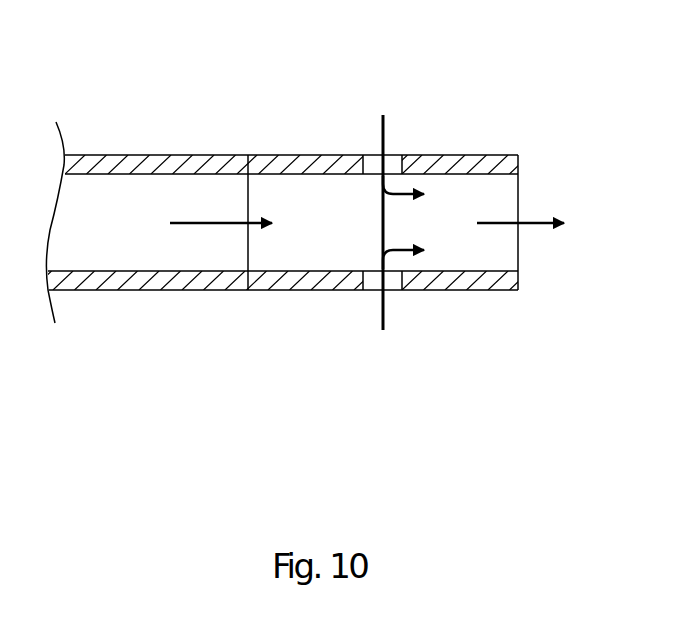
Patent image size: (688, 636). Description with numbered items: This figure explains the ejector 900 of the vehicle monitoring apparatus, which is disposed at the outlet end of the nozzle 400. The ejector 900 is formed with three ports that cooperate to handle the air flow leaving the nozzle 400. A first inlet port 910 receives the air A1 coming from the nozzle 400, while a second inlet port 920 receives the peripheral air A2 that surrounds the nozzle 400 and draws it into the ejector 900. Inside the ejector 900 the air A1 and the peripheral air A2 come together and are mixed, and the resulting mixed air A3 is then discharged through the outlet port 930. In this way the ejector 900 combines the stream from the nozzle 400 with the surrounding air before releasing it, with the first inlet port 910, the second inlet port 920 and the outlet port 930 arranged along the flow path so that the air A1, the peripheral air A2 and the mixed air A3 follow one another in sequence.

The ejector 900 is at (506, 113).
The nozzle 400 is at (170, 290).
The first inlet port 910 is at (272, 271).
The second inlet port 920 is at (368, 158).
The outlet port 930 is at (518, 248).
The air A1 is at (208, 222).
The peripheral air A2 is at (385, 118).
The mixed air A3 is at (535, 222).